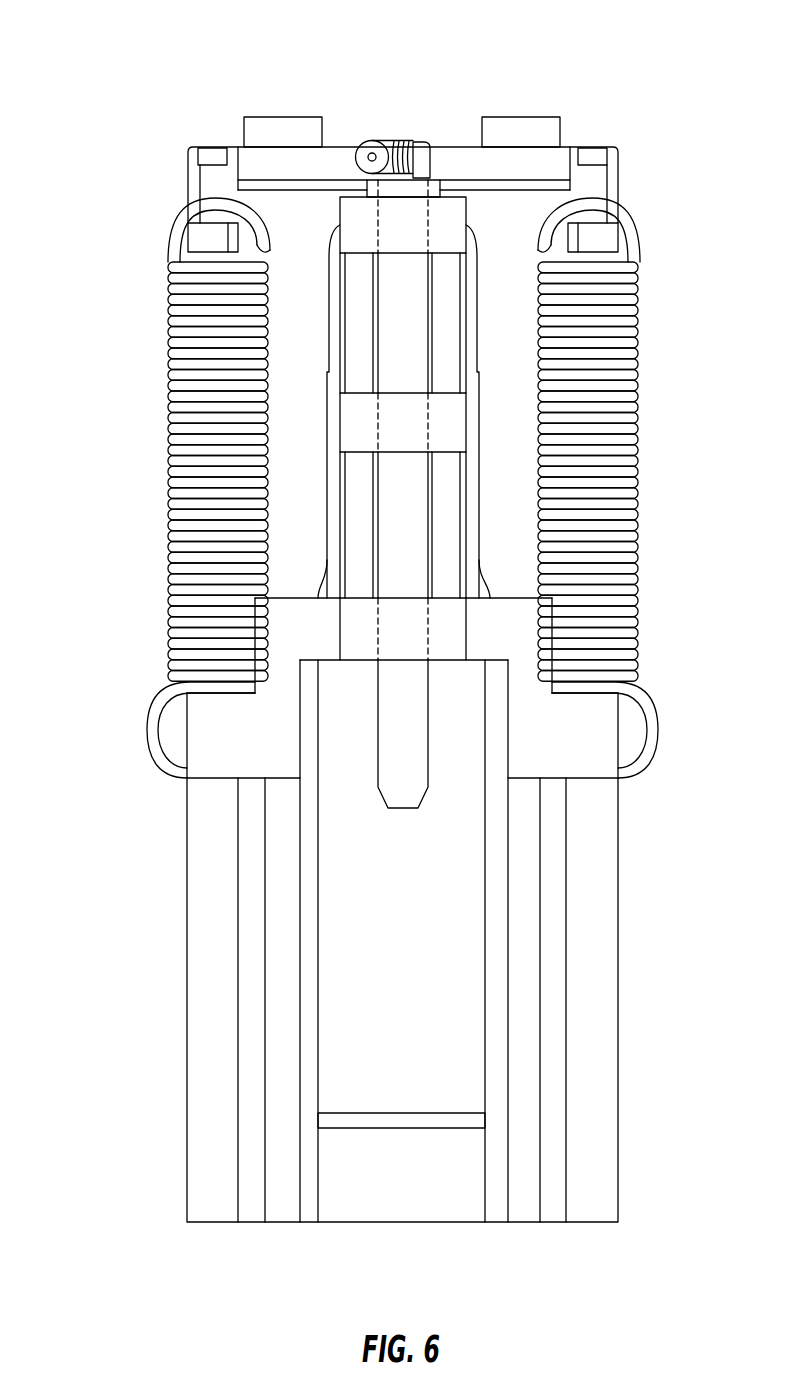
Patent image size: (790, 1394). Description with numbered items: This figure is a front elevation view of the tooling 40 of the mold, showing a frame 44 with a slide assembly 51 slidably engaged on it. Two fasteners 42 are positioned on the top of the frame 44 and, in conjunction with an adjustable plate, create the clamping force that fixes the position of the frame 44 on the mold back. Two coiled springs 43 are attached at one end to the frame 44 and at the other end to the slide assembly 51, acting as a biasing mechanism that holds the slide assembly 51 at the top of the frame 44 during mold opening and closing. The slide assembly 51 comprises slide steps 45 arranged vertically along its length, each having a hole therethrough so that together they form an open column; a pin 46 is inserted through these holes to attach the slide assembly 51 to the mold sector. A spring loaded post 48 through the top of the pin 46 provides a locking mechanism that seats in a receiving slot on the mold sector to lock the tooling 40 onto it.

The tooling 40 is at (106, 50).
The fastener 42 is at (283, 113).
The springs 43 is at (168, 404).
The frame 44 is at (516, 224).
The slide steps 45 is at (357, 225).
The pin 46 is at (417, 540).
The spring loaded post 48 is at (400, 143).
The slide assembly 51 is at (597, 738).